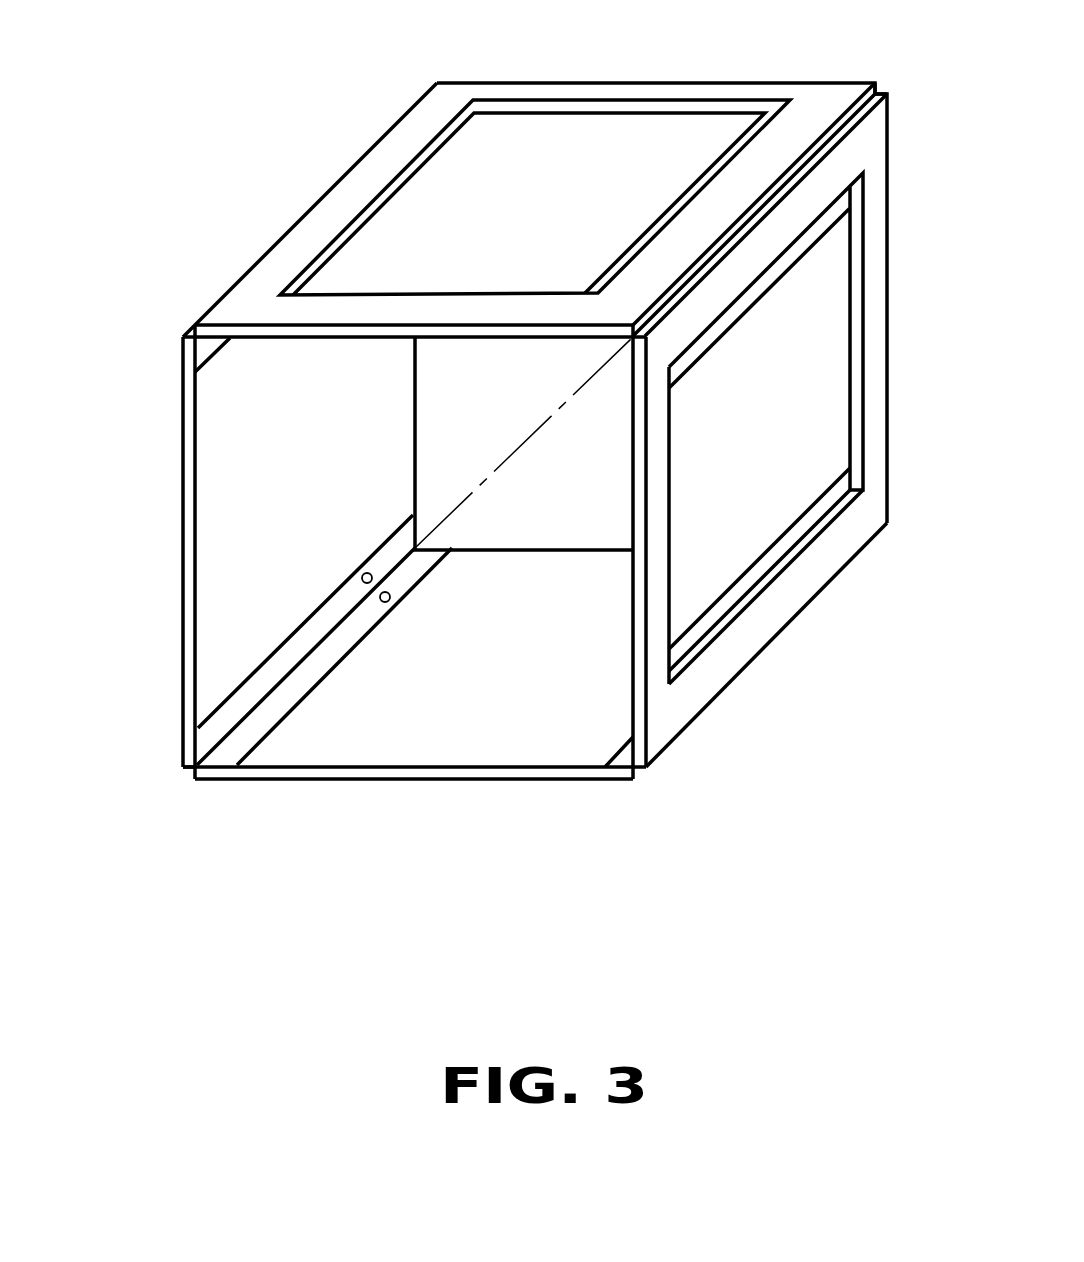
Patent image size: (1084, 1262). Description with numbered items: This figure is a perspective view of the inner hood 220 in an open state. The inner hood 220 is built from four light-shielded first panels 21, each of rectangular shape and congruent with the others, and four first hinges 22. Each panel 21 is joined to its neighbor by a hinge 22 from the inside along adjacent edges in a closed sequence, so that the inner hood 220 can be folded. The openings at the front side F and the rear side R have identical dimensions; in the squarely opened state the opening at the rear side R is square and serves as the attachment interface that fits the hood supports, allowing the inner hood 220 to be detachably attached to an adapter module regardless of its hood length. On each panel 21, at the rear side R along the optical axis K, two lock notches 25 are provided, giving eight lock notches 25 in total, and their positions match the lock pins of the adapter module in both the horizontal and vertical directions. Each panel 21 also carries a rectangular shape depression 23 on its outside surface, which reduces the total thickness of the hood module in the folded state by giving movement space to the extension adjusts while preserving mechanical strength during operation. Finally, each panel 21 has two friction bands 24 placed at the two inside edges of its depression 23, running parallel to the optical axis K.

The inner hood 220 is at (292, 199).
The first panel 21 is at (762, 92).
The first hinge 22 is at (207, 343).
The rectangular shape depression 23 is at (635, 143).
The friction band 24 is at (652, 228).
The lock notch 25 is at (362, 576).
The optical axis K is at (573, 390).
The front side F is at (190, 772).
The rear side R is at (877, 85).